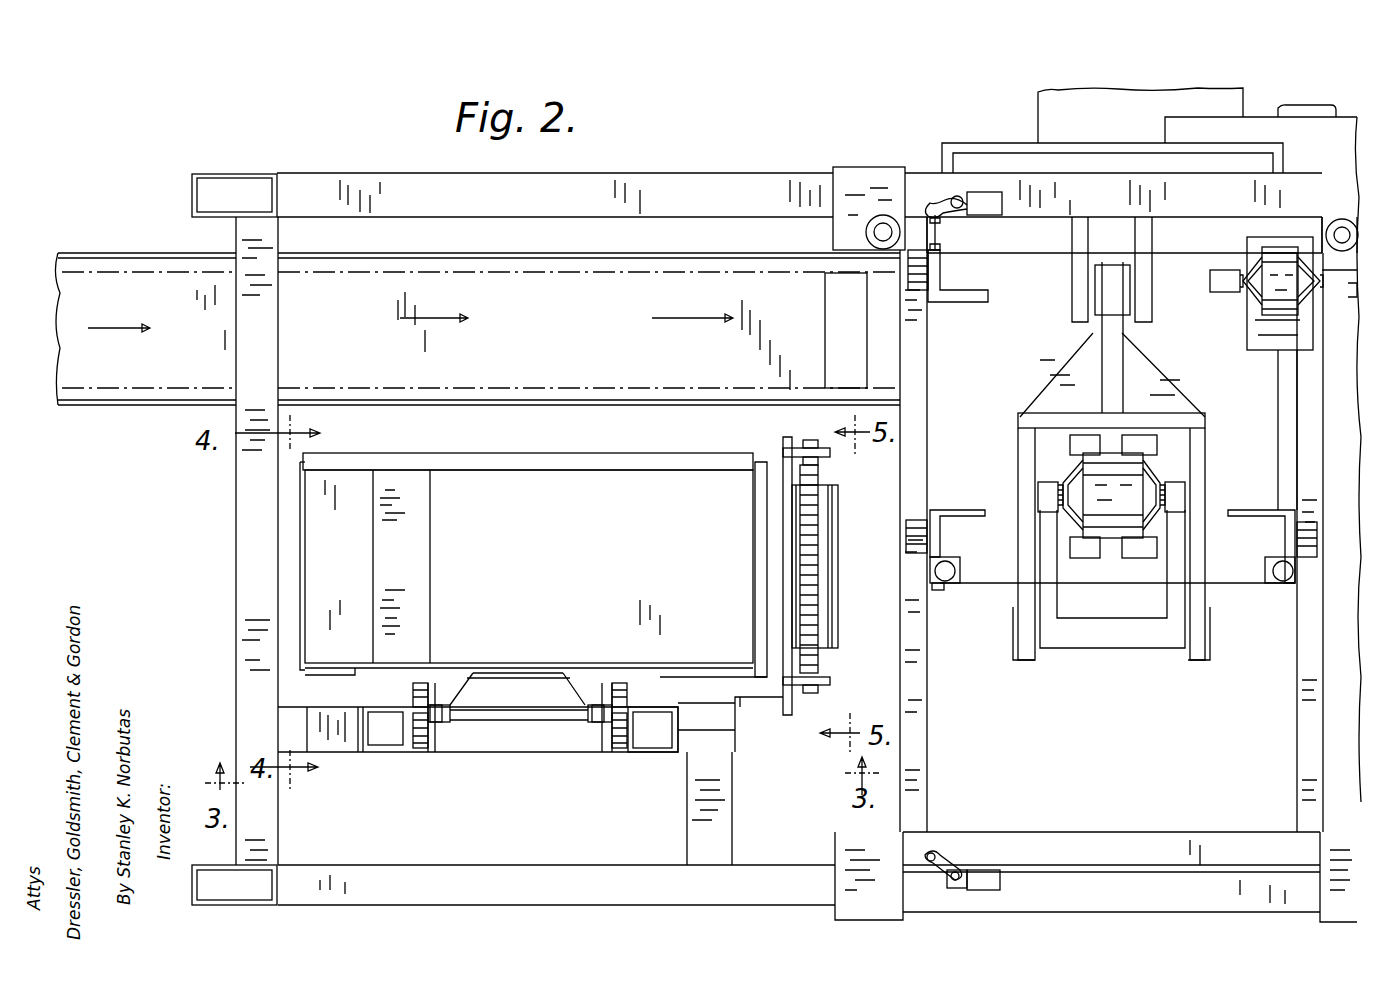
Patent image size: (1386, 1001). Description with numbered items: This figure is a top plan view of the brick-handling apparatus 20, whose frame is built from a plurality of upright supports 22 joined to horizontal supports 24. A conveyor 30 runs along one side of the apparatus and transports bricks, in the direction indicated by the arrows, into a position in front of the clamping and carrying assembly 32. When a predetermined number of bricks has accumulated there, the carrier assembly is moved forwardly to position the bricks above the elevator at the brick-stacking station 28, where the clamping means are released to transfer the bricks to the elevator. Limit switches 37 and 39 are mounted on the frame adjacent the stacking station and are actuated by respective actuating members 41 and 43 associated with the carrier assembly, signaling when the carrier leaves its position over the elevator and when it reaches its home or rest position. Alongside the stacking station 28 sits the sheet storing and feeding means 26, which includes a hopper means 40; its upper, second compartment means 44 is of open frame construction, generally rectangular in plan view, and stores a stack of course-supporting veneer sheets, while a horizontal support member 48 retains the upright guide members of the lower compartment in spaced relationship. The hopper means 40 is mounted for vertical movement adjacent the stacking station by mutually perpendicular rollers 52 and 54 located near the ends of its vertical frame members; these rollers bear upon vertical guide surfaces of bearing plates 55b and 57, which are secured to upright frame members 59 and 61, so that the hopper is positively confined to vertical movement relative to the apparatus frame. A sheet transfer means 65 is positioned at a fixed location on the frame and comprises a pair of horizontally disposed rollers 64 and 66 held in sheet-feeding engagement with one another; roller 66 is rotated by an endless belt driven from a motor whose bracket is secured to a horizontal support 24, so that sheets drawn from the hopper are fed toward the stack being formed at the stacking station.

The brick-handling apparatus 20 is at (812, 148).
The upright supports 22 is at (230, 175).
The horizontal supports 24 is at (628, 190).
The sheet storing and feeding means 26 is at (541, 640).
The brick-stacking station 28 is at (1110, 675).
The conveyor 30 is at (163, 254).
The clamping and carrying assembly 32 is at (1032, 243).
The limit switch 37 is at (985, 865).
The limit switch 39 is at (1005, 204).
The hopper means 40 is at (293, 596).
The actuating member 41 is at (948, 588).
The actuating member 43 is at (940, 236).
The second compartment means 44 is at (632, 567).
The horizontal support member 48 is at (653, 455).
The rollers 52 is at (422, 685).
The rollers 54 is at (588, 722).
The bearing plate 55b is at (418, 708).
The bearing plate 57 is at (636, 710).
The upright frame member 59 is at (392, 752).
The upright frame member 61 is at (652, 752).
The roller 64 is at (820, 540).
The sheet transfer means 65 is at (866, 637).
The roller 66 is at (838, 590).